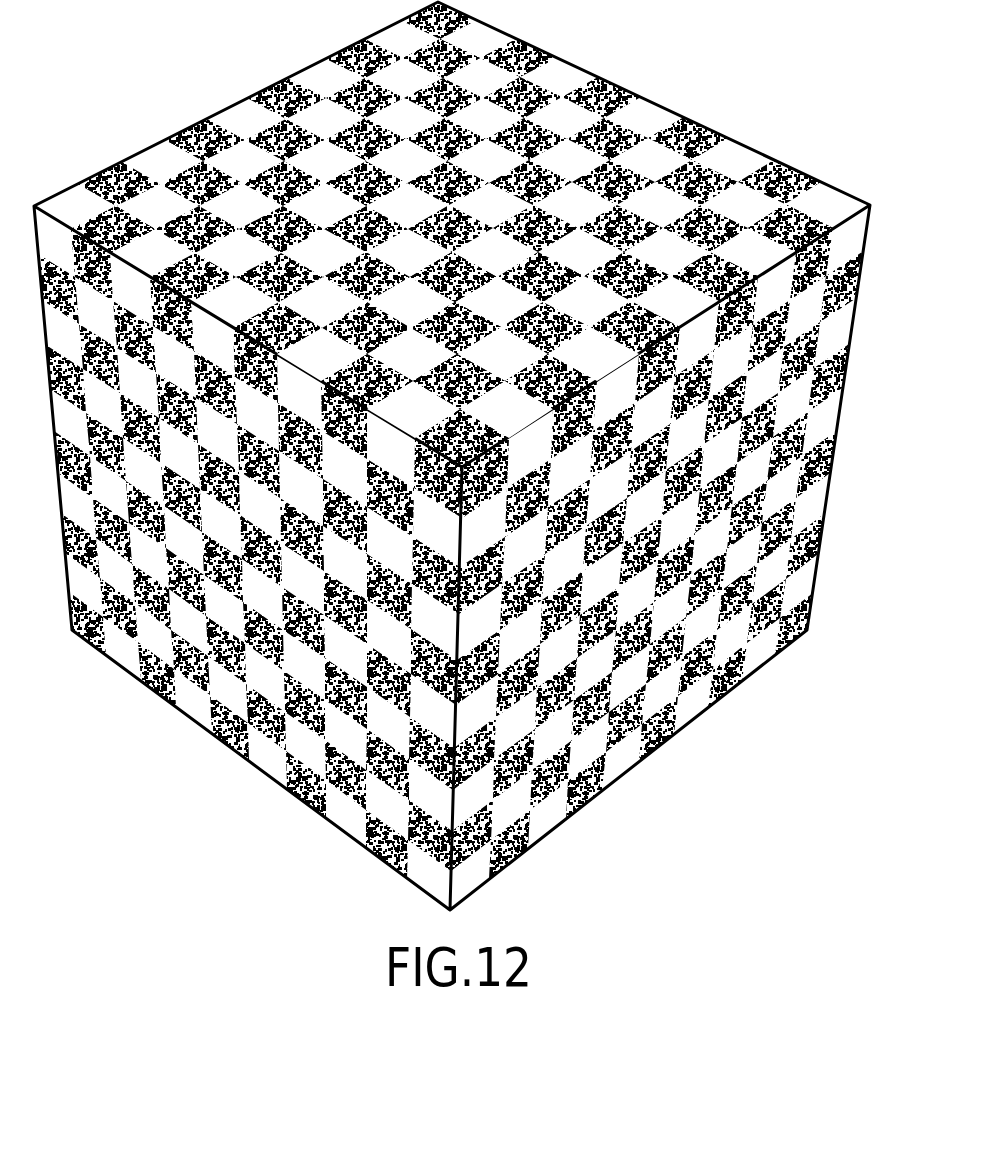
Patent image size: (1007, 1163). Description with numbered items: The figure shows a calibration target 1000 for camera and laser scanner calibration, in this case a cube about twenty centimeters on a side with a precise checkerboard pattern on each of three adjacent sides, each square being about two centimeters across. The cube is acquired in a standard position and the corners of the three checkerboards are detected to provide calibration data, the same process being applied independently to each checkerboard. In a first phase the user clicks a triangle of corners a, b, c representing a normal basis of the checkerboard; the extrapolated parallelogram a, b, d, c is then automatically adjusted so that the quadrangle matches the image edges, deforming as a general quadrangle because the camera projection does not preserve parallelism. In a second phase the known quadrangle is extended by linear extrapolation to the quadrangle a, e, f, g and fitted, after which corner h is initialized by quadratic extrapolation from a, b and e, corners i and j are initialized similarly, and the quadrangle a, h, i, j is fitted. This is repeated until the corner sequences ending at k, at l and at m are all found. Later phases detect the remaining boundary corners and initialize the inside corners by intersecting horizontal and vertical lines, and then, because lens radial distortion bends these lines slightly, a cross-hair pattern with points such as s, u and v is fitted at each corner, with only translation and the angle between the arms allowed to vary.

The calibration target 1000 is at (772, 108).
The corner a is at (462, 424).
The corner b is at (506, 397).
The corner c is at (413, 397).
The corner d is at (459, 368).
The corner e is at (551, 368).
The corner f is at (456, 315).
The corner g is at (367, 367).
The corner h is at (593, 341).
The corner i is at (452, 233).
The corner j is at (322, 339).
The corner k is at (790, 220).
The corner l is at (441, 53).
The corner m is at (113, 219).
The cross-hair point s is at (324, 196).
The cross-hair point u is at (406, 152).
The cross-hair point v is at (325, 152).